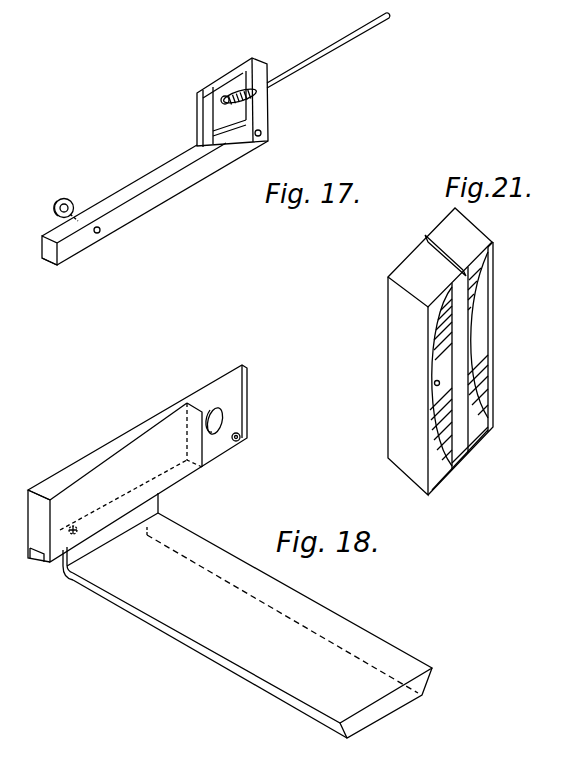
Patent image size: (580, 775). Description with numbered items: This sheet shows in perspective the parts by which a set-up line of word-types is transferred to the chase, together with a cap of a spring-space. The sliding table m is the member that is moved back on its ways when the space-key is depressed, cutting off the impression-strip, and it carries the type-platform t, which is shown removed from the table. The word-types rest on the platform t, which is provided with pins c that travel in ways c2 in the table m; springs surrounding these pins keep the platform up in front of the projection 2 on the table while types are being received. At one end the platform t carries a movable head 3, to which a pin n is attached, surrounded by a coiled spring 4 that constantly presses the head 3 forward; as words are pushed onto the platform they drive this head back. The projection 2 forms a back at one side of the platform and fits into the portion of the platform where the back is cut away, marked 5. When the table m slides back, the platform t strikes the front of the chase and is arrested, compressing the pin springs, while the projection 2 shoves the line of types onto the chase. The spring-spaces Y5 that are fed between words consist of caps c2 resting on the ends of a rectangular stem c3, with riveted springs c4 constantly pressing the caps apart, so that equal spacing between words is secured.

In FIG. 17, the cut-away portion of type-platform back 5 is at (155, 203).
In FIG. 17, the type-platform t is at (45, 253).
In FIG. 17, the movable head 3 is at (207, 125).
In FIG. 17, the coiled spring 4 is at (241, 99).
In FIG. 17, the pins c is at (57, 205).
In FIG. 17, the pin n is at (328, 50).
In FIG. 21, the spring-space Y5 is at (388, 375).
In FIG. 21, the springs c4 is at (477, 303).
In FIG. 21, the caps / ways c2 is at (494, 350).
In FIG. 18, the caps / ways c2 is at (240, 437).
In FIG. 21, the stem c3 is at (460, 438).
In FIG. 18, the sliding table m is at (84, 464).
In FIG. 18, the projection 2 is at (118, 453).